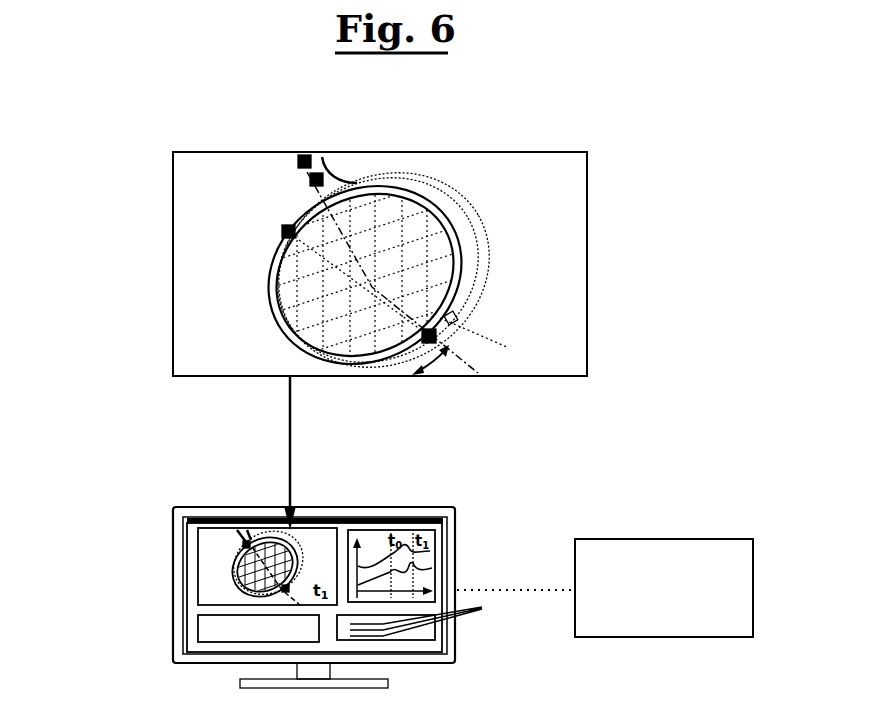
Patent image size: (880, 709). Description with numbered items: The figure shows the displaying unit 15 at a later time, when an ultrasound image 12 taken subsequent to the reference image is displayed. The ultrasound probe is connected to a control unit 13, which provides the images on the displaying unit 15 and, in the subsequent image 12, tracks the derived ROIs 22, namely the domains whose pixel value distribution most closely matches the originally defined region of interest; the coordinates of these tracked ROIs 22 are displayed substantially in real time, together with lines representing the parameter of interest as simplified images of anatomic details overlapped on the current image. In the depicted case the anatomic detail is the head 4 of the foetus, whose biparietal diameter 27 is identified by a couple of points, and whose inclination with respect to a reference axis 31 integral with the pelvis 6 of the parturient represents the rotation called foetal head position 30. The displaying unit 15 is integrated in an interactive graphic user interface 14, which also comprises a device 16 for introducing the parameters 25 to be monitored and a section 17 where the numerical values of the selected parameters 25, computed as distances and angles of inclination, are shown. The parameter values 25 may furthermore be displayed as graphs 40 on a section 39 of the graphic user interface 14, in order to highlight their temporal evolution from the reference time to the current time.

The head 4 is at (447, 228).
The pelvis 6 is at (298, 195).
The ultrasound image 12 is at (268, 296).
The control unit 13 is at (678, 602).
The interactive graphic user interface 14 is at (462, 516).
The displaying unit 15 is at (198, 144).
The device for introducing parameters 16 is at (440, 638).
The section for displaying numerical values 17 is at (197, 632).
The derived ROI 22 is at (310, 180).
The parameters 25 is at (430, 617).
The biparietal diameter 27 is at (460, 273).
The foetal head position 30 is at (433, 348).
The reference axis 31 is at (405, 200).
The section 39 is at (423, 580).
The graphs 40 is at (412, 553).